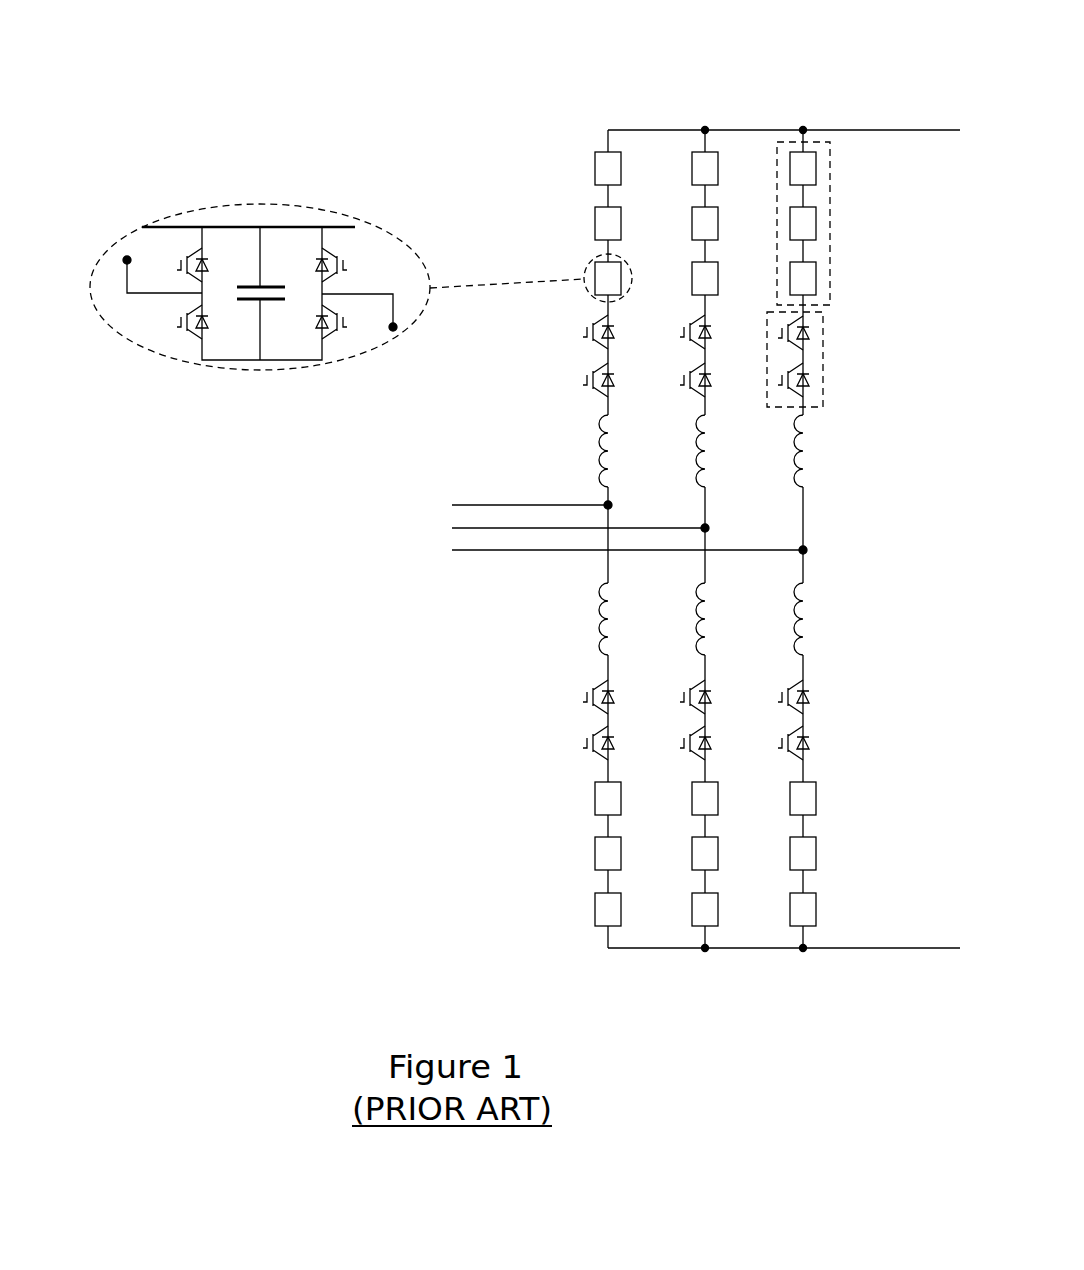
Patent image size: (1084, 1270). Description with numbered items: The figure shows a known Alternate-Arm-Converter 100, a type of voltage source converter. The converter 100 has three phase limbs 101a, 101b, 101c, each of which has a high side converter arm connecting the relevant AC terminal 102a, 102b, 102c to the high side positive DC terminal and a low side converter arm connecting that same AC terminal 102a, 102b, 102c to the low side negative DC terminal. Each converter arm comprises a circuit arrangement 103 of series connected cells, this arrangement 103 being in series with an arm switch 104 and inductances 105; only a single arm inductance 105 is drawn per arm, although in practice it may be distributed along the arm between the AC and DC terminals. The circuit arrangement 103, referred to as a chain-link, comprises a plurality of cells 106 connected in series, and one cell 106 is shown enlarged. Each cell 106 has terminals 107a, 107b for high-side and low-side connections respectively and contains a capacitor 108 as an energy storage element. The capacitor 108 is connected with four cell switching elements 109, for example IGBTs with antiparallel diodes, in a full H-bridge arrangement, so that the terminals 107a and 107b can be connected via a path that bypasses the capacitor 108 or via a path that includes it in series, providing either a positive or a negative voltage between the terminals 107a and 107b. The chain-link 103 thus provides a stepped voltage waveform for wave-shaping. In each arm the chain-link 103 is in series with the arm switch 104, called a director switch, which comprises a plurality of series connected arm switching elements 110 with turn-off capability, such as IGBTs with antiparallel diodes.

The Alternate-Arm-Converter 100 is at (330, 100).
The phase limb 101a is at (628, 106).
The phase limb 101b is at (726, 106).
The phase limb 101c is at (825, 106).
The AC terminal 102a is at (605, 504).
The AC terminal 102b is at (708, 528).
The AC terminal 102c is at (806, 550).
The circuit arrangement 103 is at (831, 212).
The arm switch 104 is at (824, 352).
The inductances 105 is at (810, 445).
The cell 106 is at (196, 214).
The terminal 107a is at (124, 261).
The terminal 107b is at (395, 331).
The capacitor 108 is at (268, 286).
The cell switching elements 109 is at (340, 256).
The arm switching elements 110 is at (591, 372).